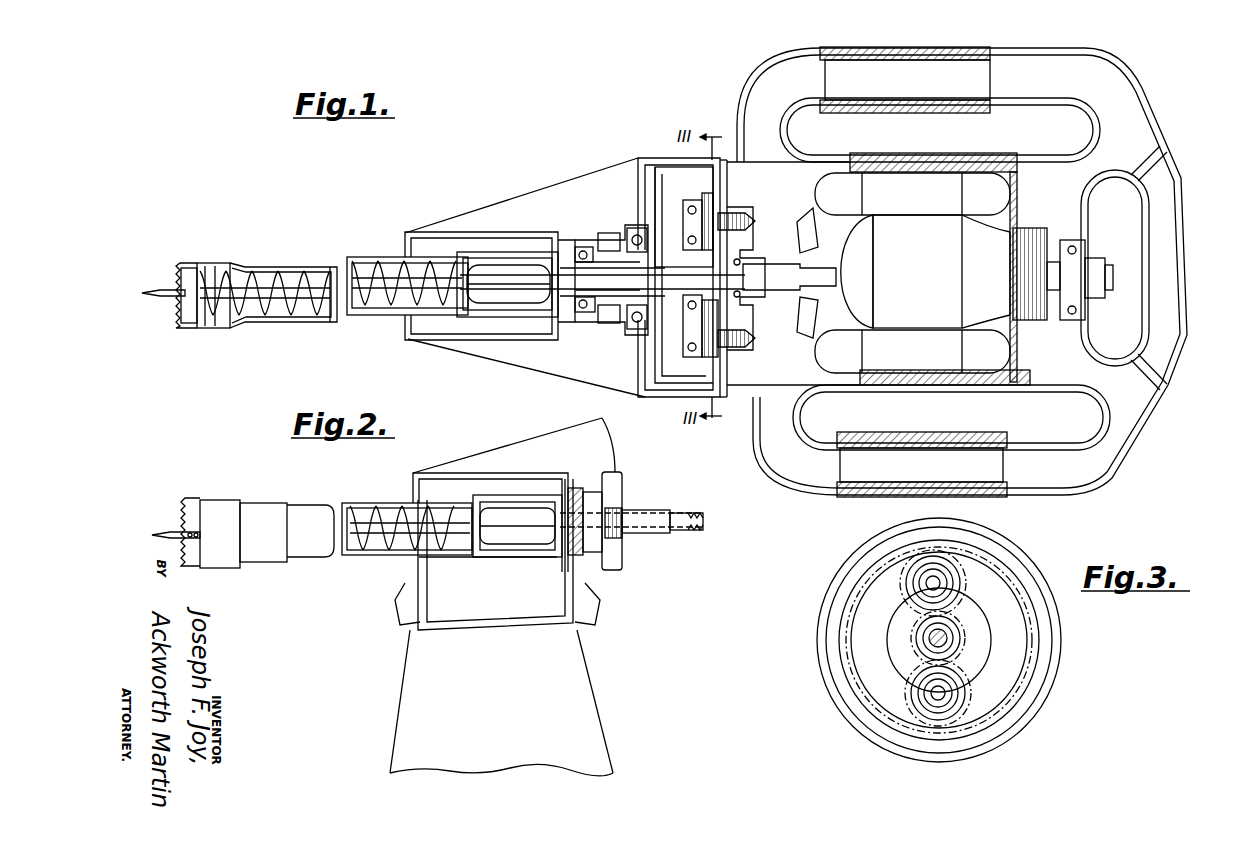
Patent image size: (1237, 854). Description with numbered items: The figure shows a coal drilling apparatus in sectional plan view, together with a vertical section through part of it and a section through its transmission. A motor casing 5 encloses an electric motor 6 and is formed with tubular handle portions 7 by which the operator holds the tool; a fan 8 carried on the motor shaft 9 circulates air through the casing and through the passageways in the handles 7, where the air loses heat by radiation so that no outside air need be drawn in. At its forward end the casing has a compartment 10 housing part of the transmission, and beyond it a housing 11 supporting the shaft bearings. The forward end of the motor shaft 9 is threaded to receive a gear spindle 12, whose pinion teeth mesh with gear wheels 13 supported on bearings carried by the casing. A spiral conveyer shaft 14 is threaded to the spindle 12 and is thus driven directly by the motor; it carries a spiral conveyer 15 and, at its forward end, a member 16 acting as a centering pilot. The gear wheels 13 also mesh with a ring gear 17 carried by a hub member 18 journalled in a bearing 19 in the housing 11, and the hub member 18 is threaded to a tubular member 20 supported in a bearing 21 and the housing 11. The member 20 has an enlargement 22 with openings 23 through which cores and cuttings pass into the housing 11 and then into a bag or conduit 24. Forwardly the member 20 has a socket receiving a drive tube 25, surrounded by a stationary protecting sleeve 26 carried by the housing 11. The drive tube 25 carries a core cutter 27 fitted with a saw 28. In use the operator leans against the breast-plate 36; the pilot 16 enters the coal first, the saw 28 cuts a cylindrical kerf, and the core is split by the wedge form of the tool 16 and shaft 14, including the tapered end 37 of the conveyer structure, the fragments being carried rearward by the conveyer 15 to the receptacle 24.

In FIG. 1, the motor casing 5 is at (938, 153).
In FIG. 1, the electric motor 6 is at (1000, 232).
In FIG. 1, the tubular handle portions 7 is at (900, 50).
In FIG. 1, the fan 8 is at (806, 214).
In FIG. 1, the motor shaft 9 is at (772, 292).
In FIG. 3, the motor shaft 9 is at (929, 645).
In FIG. 1, the compartment 10 is at (672, 172).
In FIG. 3, the compartment 10 is at (858, 566).
In FIG. 1, the housing 11 is at (520, 232).
In FIG. 2, the housing 11 is at (486, 474).
In FIG. 1, the gear spindle 12 is at (752, 255).
In FIG. 3, the gear spindle 12 is at (925, 633).
In FIG. 1, the gear wheels 13 is at (714, 196).
In FIG. 3, the gear wheels 13 is at (915, 583).
In FIG. 1, the spiral conveyer shaft 14 is at (229, 287).
In FIG. 2, the spiral conveyer shaft 14 is at (687, 512).
In FIG. 1, the spiral conveyer 15 is at (378, 316).
In FIG. 2, the spiral conveyer 15 is at (380, 545).
In FIG. 1, the centering device and pilot 16 is at (152, 292).
In FIG. 2, the centering device and pilot 16 is at (165, 533).
In FIG. 1, the ring gear 17 is at (645, 166).
In FIG. 3, the ring gear 17 is at (1022, 673).
In FIG. 1, the hub member 18 is at (606, 234).
In FIG. 1, the bearing 19 is at (634, 229).
In FIG. 1, the tubular member 20 is at (578, 248).
In FIG. 1, the bearing 21 is at (588, 315).
In FIG. 1, the enlargement 22 is at (482, 253).
In FIG. 2, the enlargement 22 is at (520, 497).
In FIG. 1, the openings 23 is at (497, 270).
In FIG. 2, the openings 23 is at (495, 557).
In FIG. 2, the bag or conduit 24 is at (580, 676).
In FIG. 1, the shaft extension or drive tube 25 is at (364, 262).
In FIG. 2, the shaft extension or drive tube 25 is at (362, 507).
In FIG. 1, the protecting sleeve 26 is at (333, 265).
In FIG. 2, the protecting sleeve 26 is at (310, 508).
In FIG. 1, the core cutter 27 is at (262, 268).
In FIG. 2, the core cutter 27 is at (222, 505).
In FIG. 1, the saw 28 is at (182, 263).
In FIG. 2, the saw 28 is at (190, 498).
In FIG. 1, the breast-plate 36 is at (1184, 252).
In FIG. 1, the tapered end 37 is at (210, 263).